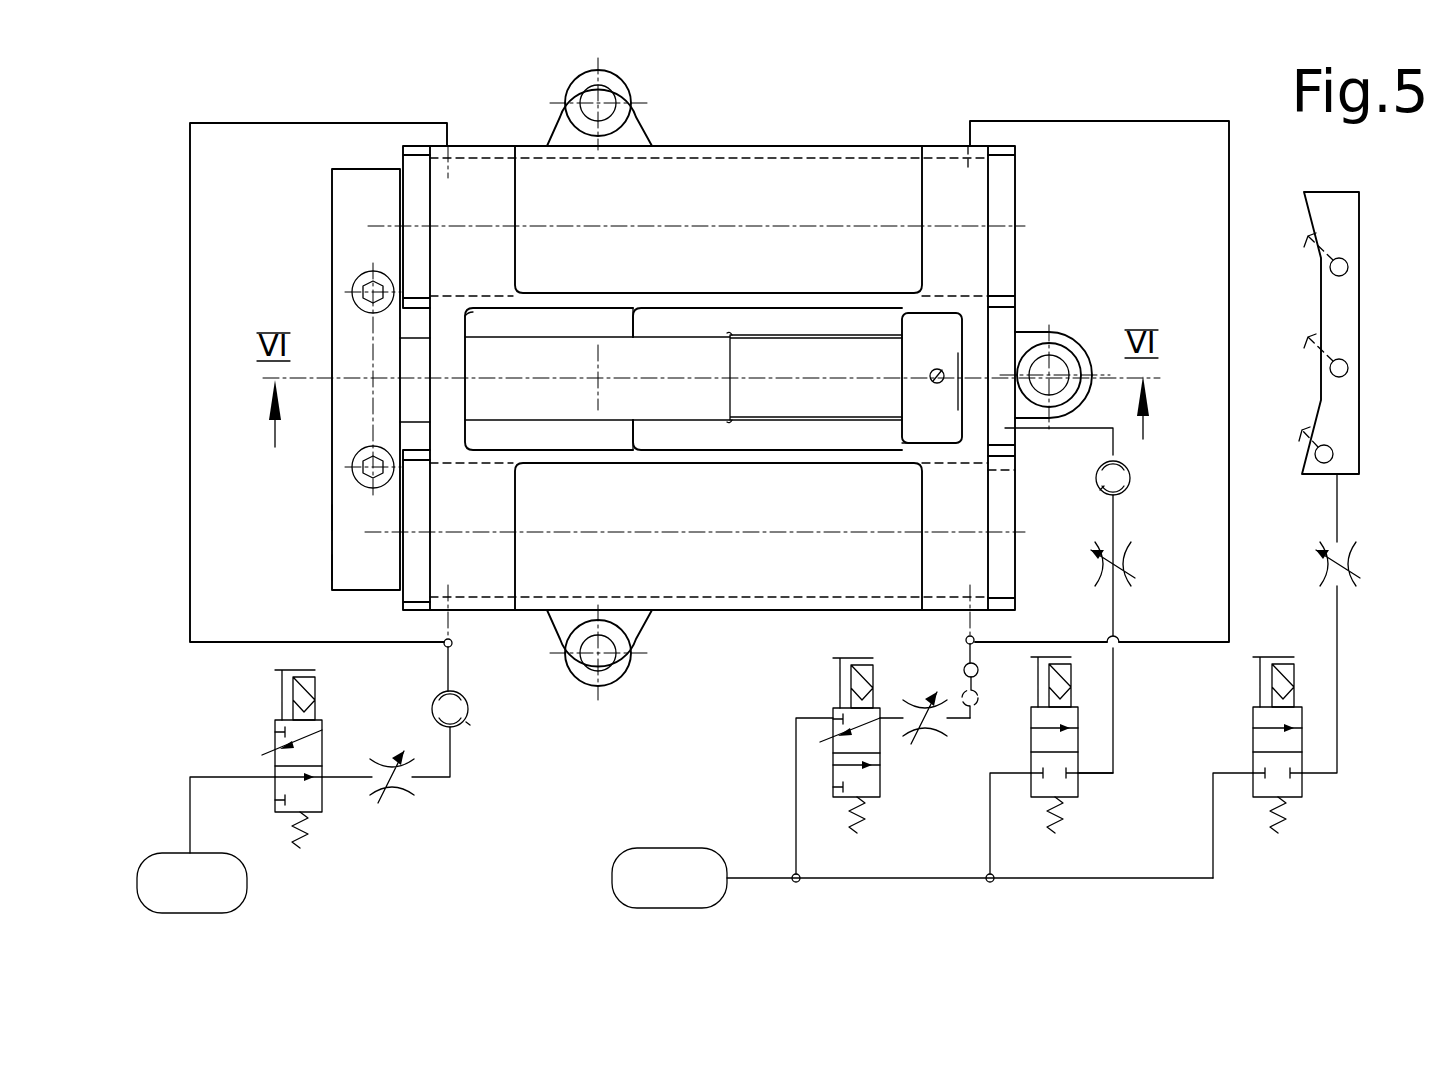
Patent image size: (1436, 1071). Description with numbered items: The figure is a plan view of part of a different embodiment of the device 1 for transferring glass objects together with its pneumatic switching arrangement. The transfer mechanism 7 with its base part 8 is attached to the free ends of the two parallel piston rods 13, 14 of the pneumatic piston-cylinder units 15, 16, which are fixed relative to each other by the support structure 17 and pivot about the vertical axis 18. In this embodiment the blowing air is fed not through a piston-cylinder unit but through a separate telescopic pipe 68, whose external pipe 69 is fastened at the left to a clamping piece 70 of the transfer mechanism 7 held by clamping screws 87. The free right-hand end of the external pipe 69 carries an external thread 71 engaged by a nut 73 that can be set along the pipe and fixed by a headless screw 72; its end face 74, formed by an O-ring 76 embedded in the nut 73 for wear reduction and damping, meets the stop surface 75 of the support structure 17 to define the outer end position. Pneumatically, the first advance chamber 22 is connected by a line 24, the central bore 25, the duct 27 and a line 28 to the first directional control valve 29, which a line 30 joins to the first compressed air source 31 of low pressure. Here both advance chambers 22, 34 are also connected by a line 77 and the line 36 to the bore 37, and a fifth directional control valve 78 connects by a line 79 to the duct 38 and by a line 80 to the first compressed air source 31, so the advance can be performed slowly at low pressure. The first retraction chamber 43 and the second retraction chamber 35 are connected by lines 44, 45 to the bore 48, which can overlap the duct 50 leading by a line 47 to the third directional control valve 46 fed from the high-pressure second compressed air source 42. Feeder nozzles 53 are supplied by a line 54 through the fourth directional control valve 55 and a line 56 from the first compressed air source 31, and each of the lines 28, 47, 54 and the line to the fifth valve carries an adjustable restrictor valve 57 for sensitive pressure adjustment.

The device 1 is at (742, 130).
The transfer mechanism 7 is at (330, 518).
The base part 8 is at (330, 565).
The first piston rod 13 is at (410, 213).
The second piston rod 14 is at (400, 515).
The first piston-cylinder unit 15 is at (417, 146).
The second piston-cylinder unit 16 is at (420, 612).
The support structure 17 is at (947, 146).
The vertical axis 18 is at (600, 378).
The first advance chamber 22 is at (990, 200).
The line 24 is at (1114, 447).
The central bore 25 is at (1124, 490).
The duct 27 is at (1097, 492).
The line 28 is at (1114, 722).
The first directional control valve 29 is at (1078, 797).
The line 30 is at (990, 840).
The first compressed air source 31 is at (605, 880).
The second advance chamber 34 is at (983, 494).
The second retraction chamber 35 is at (746, 583).
The line 36 is at (975, 640).
The bore 37 is at (966, 665).
The duct 38 is at (990, 701).
The second compressed air source 42 is at (247, 885).
The first retraction chamber 43 is at (474, 142).
The line 44 is at (192, 222).
The line 45 is at (452, 640).
The third directional control valve 46 is at (322, 812).
The line 47 is at (452, 772).
The bore 48 is at (468, 705).
The duct 50 is at (468, 722).
The feeder nozzles 53 is at (1348, 275).
The line 54 is at (1340, 535).
The fourth directional control valve 55 is at (1338, 776).
The line 56 is at (1190, 878).
The adjustable restrictor valve 57 is at (402, 800).
The telescopic pipe 68 is at (531, 337).
The external pipe 69 is at (680, 352).
The clamping piece 70 is at (348, 197).
The external thread 71 is at (785, 337).
The headless screw 72 is at (937, 384).
The nut 73 is at (940, 327).
The end face 74 is at (900, 327).
The stop surface 75 is at (470, 312).
The O-ring 76 is at (900, 430).
The line 77 is at (1229, 232).
The fifth directional control valve 78 is at (880, 797).
The line 79 is at (970, 730).
The line 80 is at (795, 772).
The clamping screws 87 is at (352, 293).